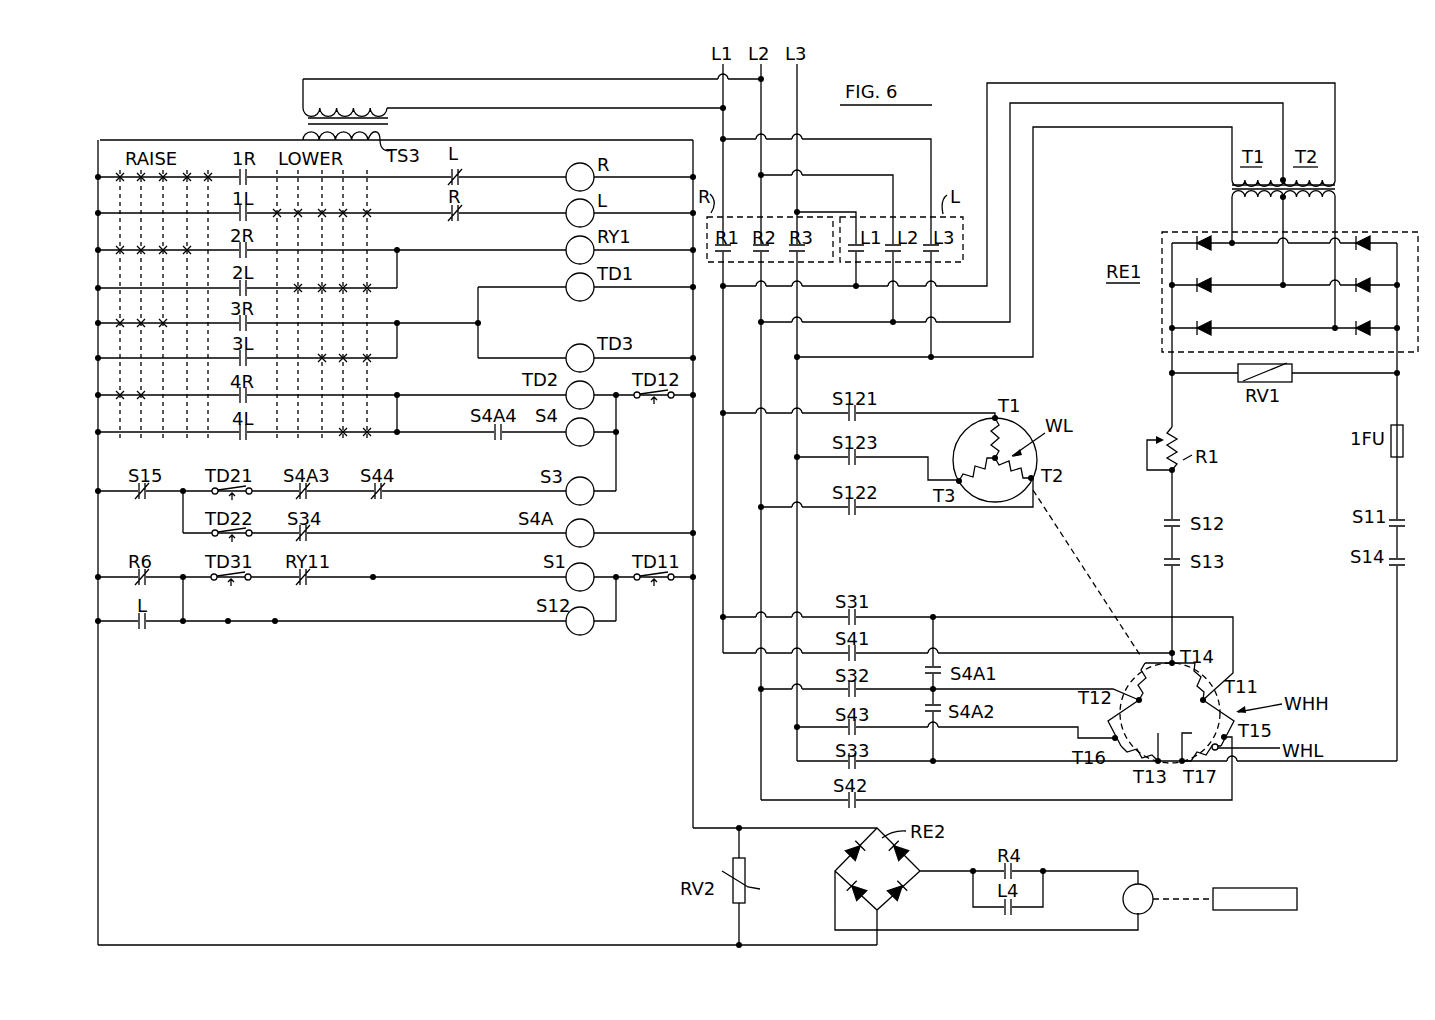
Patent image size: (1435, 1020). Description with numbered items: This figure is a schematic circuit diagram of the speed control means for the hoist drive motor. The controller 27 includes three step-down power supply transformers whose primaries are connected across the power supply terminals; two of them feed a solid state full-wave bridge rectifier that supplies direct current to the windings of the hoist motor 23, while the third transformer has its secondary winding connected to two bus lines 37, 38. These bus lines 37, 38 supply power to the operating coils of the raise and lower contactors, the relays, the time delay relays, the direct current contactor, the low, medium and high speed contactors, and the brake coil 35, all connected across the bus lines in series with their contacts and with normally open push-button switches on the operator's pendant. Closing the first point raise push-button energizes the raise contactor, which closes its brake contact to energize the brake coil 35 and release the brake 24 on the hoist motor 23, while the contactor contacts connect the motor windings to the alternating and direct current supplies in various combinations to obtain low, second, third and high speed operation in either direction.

The motor control panel 27 is at (207, 92).
The bus line 37 is at (115, 140).
The bus line 38 is at (623, 141).
The hoist motor 23 is at (1079, 575).
The brake coil 35 is at (1147, 888).
The electromechanical brake 24 is at (1275, 890).